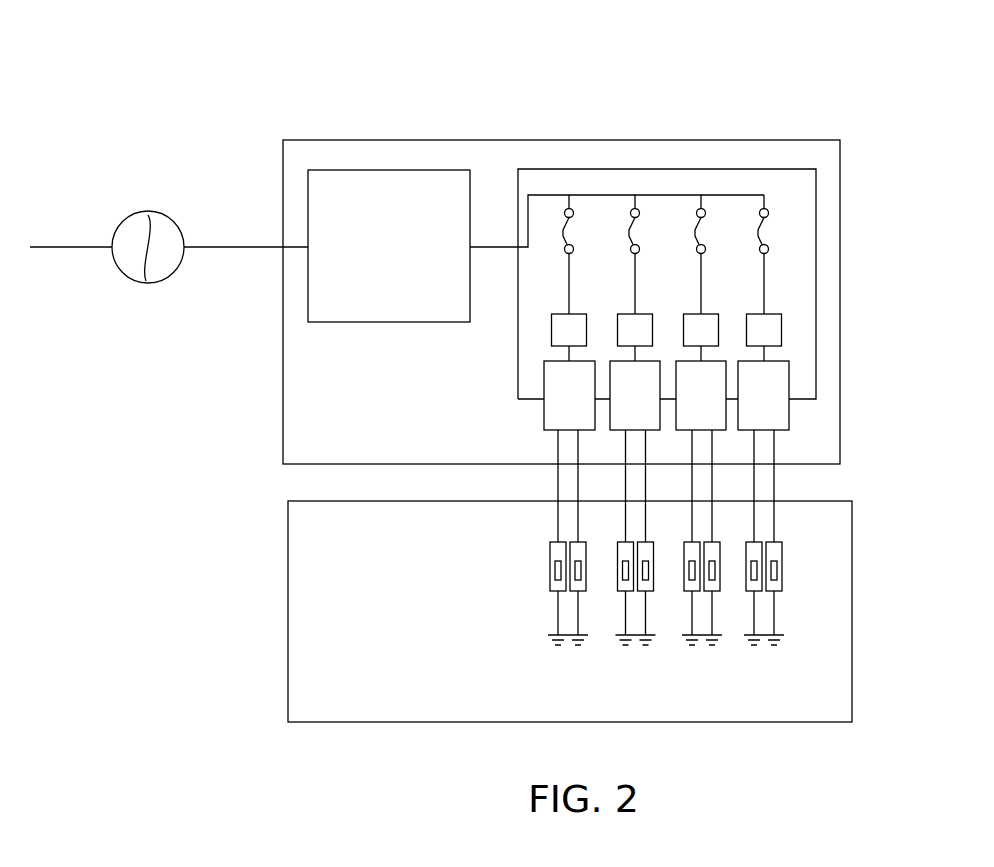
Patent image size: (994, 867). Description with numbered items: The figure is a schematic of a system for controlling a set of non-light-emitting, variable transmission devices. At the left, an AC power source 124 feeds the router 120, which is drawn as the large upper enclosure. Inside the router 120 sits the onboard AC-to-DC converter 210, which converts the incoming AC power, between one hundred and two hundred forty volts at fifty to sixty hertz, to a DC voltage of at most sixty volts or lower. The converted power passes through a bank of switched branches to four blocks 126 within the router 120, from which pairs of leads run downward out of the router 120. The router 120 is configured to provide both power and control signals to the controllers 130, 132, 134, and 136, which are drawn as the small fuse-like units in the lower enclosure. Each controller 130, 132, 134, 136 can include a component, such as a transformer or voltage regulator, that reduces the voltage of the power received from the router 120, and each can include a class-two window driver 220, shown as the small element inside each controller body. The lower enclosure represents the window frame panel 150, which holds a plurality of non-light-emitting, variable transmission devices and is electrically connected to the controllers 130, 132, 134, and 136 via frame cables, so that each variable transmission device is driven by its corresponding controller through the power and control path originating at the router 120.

The router 120 is at (787, 139).
The AC power source 124 is at (155, 200).
The power control modules 126 is at (563, 396).
The controller 130 is at (780, 552).
The controller 132 is at (720, 561).
The controller 134 is at (615, 562).
The controller 136 is at (553, 550).
The window frame panel 150 is at (240, 601).
The onboard AC-to-DC converter 210 is at (366, 170).
The class 2 window driver 220 is at (778, 572).